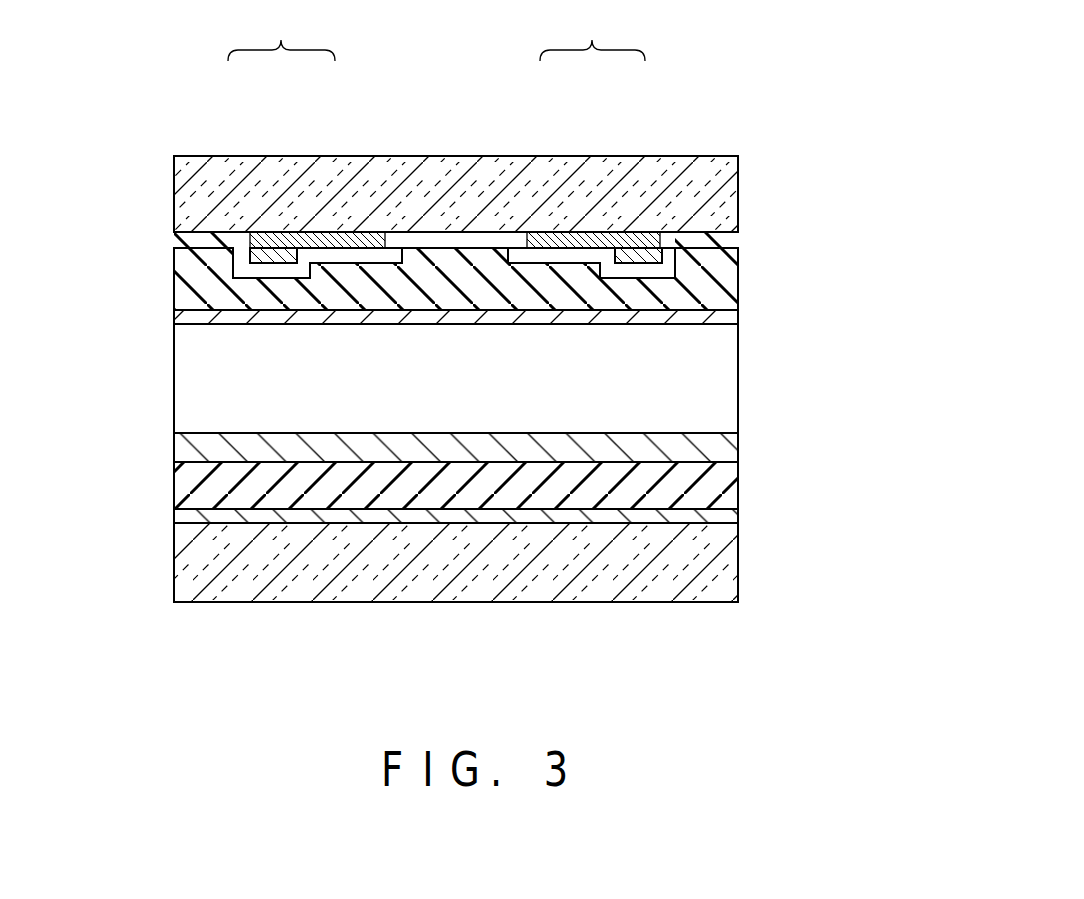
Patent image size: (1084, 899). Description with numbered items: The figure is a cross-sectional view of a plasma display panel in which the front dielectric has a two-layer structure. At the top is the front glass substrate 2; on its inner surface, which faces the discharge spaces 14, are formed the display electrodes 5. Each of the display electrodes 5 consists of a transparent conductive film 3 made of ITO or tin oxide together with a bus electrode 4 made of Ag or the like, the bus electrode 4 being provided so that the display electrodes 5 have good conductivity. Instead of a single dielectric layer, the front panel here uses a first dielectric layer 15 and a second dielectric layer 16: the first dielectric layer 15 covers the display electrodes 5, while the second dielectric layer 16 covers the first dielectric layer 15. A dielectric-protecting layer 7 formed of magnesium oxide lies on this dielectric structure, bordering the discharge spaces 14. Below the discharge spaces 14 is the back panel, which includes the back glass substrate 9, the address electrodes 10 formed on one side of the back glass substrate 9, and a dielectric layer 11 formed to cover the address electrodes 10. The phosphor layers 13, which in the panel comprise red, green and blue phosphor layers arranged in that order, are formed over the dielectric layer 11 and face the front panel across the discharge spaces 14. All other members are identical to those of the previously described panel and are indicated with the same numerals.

The front glass substrate 2 is at (737, 157).
The transparent conductive film 3 is at (322, 240).
The bus electrode 4 is at (267, 257).
The display electrodes 5 is at (436, 31).
The dielectric-protecting layer 7 is at (720, 320).
The back glass substrate 9 is at (655, 574).
The address electrodes 10 is at (722, 517).
The dielectric layer 11 is at (718, 487).
The phosphor layers 13 is at (718, 450).
The discharge spaces 14 is at (187, 400).
The first dielectric layer 15 is at (177, 237).
The second dielectric layer 16 is at (738, 262).